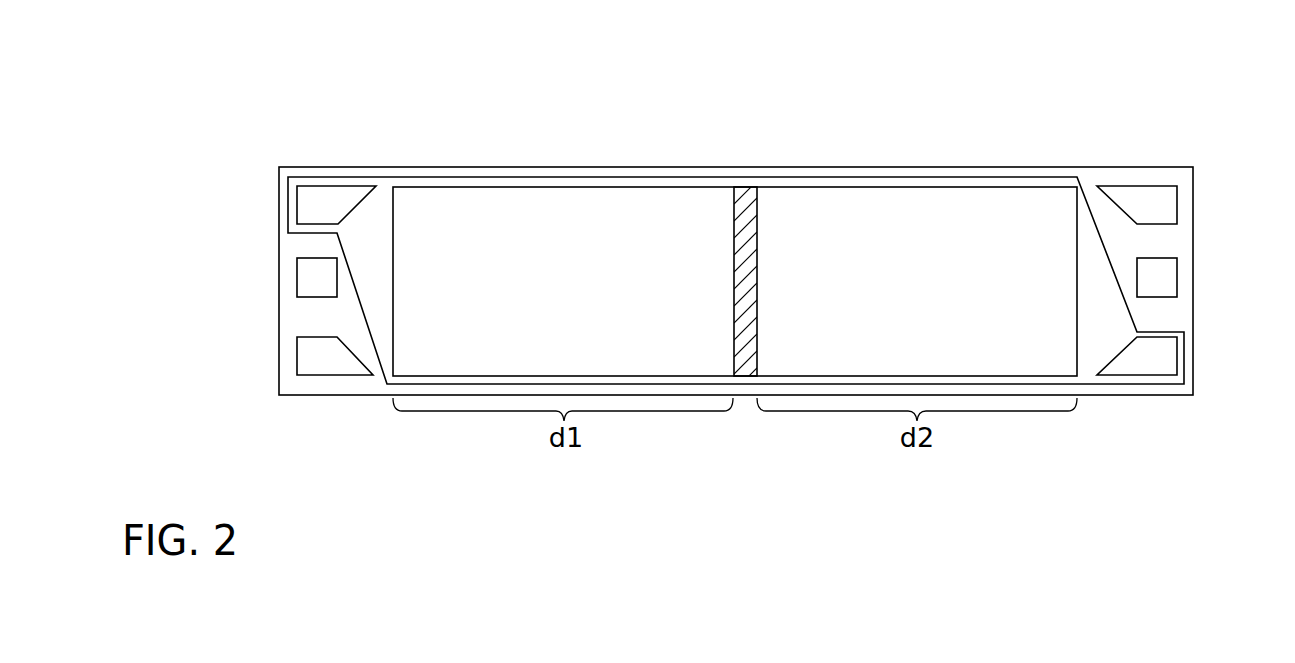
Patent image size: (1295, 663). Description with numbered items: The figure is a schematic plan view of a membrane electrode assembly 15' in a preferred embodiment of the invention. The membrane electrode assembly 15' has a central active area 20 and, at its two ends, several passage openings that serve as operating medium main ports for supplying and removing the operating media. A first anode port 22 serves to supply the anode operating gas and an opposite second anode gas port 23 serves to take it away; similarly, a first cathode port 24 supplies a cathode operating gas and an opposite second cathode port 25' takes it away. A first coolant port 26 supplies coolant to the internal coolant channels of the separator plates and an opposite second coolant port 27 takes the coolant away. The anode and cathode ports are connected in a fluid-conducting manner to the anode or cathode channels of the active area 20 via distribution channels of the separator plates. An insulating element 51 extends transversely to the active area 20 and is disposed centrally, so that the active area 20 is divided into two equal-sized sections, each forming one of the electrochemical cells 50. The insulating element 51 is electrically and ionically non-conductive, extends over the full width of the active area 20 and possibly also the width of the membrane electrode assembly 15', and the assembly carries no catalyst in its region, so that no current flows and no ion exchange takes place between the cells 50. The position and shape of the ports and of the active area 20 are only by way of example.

The membrane electrode assembly 15' is at (770, 215).
The active area 20 is at (391, 157).
The first anode port 22 is at (1161, 205).
The second anode gas port 23 is at (313, 363).
The first cathode port 24 is at (1161, 363).
The second cathode port 25' is at (286, 192).
The first coolant port 26 is at (1161, 278).
The second coolant port 27 is at (313, 280).
The electrochemical cells 50 is at (735, 281).
The insulating element 51 is at (746, 328).